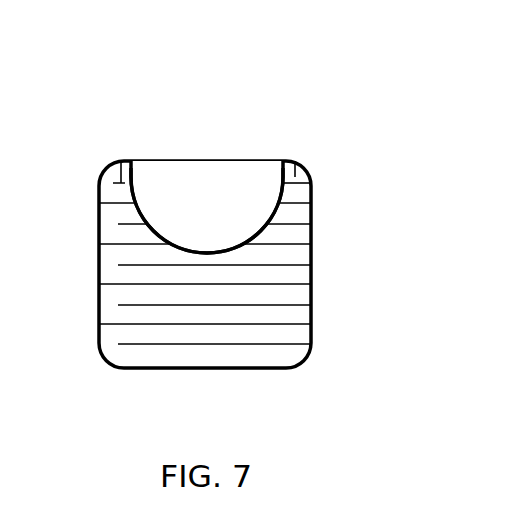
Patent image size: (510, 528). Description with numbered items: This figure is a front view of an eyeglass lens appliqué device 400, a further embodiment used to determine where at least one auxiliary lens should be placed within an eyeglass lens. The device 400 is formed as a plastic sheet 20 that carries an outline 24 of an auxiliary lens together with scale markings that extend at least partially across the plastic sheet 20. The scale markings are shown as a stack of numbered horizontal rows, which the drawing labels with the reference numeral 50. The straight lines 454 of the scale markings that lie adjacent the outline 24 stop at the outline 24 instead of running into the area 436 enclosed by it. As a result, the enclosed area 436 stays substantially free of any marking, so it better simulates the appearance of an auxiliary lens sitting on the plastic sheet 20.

The eyeglass lens appliqué device 400 is at (165, 100).
The plastic sheet 20 is at (312, 313).
The array of rows 50 is at (98, 162).
The area enclosed by the outline 436 is at (207, 207).
The outline of an auxiliary lens 24 is at (283, 197).
The straight lines 454 is at (119, 160).